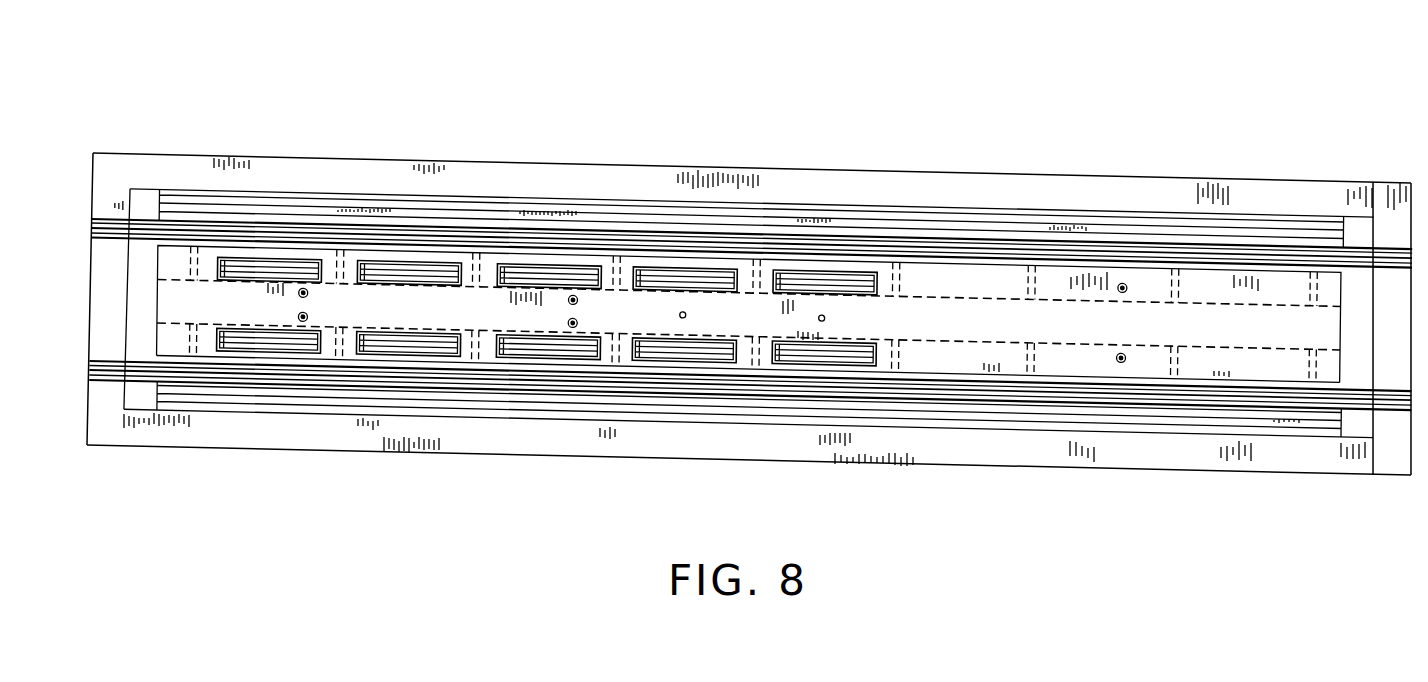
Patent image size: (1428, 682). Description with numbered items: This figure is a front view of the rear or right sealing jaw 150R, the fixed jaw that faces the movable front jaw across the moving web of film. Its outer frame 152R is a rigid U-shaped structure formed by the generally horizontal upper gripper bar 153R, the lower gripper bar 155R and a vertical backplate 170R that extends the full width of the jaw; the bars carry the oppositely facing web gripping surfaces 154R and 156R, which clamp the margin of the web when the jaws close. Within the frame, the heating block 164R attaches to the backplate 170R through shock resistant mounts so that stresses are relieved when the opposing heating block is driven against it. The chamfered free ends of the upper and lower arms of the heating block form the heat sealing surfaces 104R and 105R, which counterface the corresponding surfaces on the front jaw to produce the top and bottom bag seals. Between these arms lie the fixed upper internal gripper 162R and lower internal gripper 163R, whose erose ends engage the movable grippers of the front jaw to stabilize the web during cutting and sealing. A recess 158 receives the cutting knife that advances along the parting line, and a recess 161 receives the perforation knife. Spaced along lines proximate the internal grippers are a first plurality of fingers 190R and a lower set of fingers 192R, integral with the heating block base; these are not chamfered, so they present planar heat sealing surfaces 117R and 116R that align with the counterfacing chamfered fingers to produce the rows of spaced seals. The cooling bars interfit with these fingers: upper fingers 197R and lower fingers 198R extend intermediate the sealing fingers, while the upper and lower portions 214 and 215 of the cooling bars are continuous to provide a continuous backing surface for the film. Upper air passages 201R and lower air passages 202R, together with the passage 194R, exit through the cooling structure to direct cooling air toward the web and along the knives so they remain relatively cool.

The rear sealing jaw 150R is at (1084, 113).
The outer frame 152R is at (108, 163).
The upper gripper bar 153R is at (368, 159).
The web gripping surface 154R is at (469, 162).
The lower gripper bar 155R is at (347, 453).
The web gripping surface 156R is at (550, 453).
The recess 158 is at (187, 243).
The vertical backplate 170R is at (145, 197).
The heat sealing surface 104R is at (835, 222).
The heating block 164R is at (1183, 225).
The upper internal gripper 162R is at (765, 243).
The lower internal gripper 163R is at (975, 393).
The heat sealing surface 105R is at (1075, 415).
The lower portion of cooling bar 215 is at (457, 387).
The upper air passages 201R is at (605, 258).
The lower air passages 202R is at (748, 360).
The cooling block passage 194R is at (1220, 333).
The upper fingers 197R is at (882, 285).
The lower fingers 198R is at (883, 365).
The upper portion of cooling bar 214 is at (240, 250).
The fingers 190R is at (307, 267).
The recess 161 is at (215, 358).
The fingers 192R is at (277, 345).
The heat sealing surfaces 117R is at (660, 273).
The heat sealing surfaces 116R is at (682, 352).